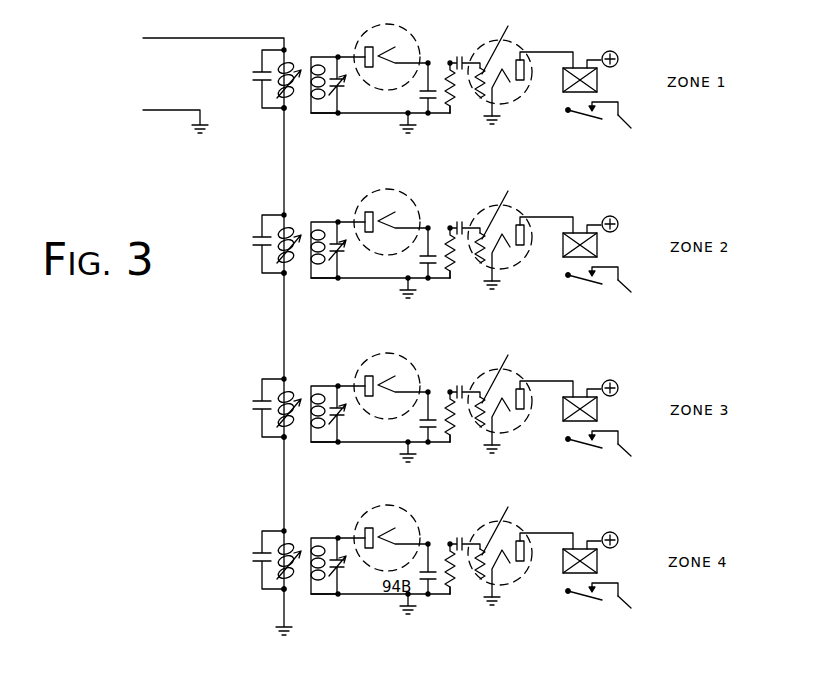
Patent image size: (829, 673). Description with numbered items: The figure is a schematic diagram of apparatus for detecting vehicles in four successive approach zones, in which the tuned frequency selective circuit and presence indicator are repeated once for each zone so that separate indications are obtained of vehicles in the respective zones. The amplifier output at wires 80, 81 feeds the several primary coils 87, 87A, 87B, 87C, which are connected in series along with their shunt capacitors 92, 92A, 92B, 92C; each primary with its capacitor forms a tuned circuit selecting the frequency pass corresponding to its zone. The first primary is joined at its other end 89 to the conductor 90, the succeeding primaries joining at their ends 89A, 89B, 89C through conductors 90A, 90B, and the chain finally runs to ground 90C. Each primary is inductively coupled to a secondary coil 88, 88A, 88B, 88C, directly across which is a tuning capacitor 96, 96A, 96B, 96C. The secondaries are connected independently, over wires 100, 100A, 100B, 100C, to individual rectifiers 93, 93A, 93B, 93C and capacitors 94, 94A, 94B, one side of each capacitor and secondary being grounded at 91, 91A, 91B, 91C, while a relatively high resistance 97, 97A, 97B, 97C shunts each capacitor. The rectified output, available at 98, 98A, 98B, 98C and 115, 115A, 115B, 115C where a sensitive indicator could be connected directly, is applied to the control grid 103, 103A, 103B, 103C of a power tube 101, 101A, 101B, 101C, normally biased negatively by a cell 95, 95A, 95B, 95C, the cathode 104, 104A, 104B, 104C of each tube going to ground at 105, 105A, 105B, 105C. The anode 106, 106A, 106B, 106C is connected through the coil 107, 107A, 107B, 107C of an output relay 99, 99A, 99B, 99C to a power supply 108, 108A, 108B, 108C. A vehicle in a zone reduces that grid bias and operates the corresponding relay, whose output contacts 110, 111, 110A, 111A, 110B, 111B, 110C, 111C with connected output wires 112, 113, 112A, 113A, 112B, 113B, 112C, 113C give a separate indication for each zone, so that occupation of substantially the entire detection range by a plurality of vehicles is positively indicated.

The amplifier output wire 80 is at (190, 37).
The amplifier output wire 81 is at (180, 110).
The primary coil 87 is at (287, 50).
The secondary coil 88 is at (320, 60).
The other end of primary 89 is at (286, 110).
The ground 90 is at (283, 168).
The ground 91 is at (404, 135).
The capacitor 92 is at (258, 79).
The rectifier 93 is at (406, 30).
The capacitor 94 is at (414, 89).
The cell 95 is at (463, 55).
The tuning capacitor 96 is at (343, 87).
The high resistance 97 is at (452, 96).
The rectified output connection 98 is at (428, 60).
The output relay 99 is at (591, 33).
The wire 100 is at (343, 54).
The power tube 101 is at (484, 44).
The control grid 103 is at (501, 41).
The cathode 104 is at (498, 78).
The ground 105 is at (491, 128).
The anode 106 is at (524, 60).
The relay coil 107 is at (597, 78).
The power supply 108 is at (612, 51).
The output contact 110 is at (583, 116).
The output contact 111 is at (611, 101).
The output wire 112 is at (567, 113).
The output wire 113 is at (633, 130).
The rectified output terminal 115 is at (449, 116).
The primary coil 87A is at (298, 238).
The secondary coil 88A is at (327, 231).
The end of primary coil 89A is at (301, 284).
The conductor 90A is at (282, 328).
The ground 91A is at (393, 298).
The capacitor 92A is at (253, 244).
The rectifier 93A is at (395, 214).
The capacitor 94A is at (411, 254).
The cell 95A is at (459, 219).
The tuning capacitor 96A is at (351, 250).
The high resistance 97A is at (463, 256).
The rectified output connection 98A is at (440, 210).
The output relay 99A is at (581, 187).
The wire 100A is at (383, 200).
The power tube 101A is at (498, 226).
The control grid 103A is at (514, 208).
The cathode 104A is at (519, 265).
The ground 105A is at (495, 303).
The anode 106A is at (544, 220).
The relay coil 107A is at (604, 245).
The power supply 108A is at (619, 214).
The output contact 110A is at (591, 290).
The output contact 111A is at (628, 267).
The output wire 112A is at (555, 295).
The output wire 113A is at (639, 298).
The rectified output terminal 115A is at (455, 290).
The primary coil 87B is at (297, 402).
The secondary coil 88B is at (327, 395).
The end of primary coil 89B is at (300, 450).
The conductor 90B is at (282, 498).
The ground 91B is at (393, 462).
The capacitor 92B is at (253, 408).
The rectifier 93B is at (393, 378).
The capacitor 94B is at (409, 418).
The cell 95B is at (458, 383).
The tuning capacitor 96B is at (350, 414).
The high resistance 97B is at (463, 421).
The rectified output connection 98B is at (434, 373).
The output relay 99B is at (581, 351).
The wire 100B is at (383, 364).
The power tube 101B is at (496, 390).
The control grid 103B is at (510, 373).
The cathode 104B is at (519, 430).
The ground 105B is at (489, 465).
The anode 106B is at (544, 385).
The relay coil 107B is at (603, 409).
The power supply 108B is at (618, 379).
The output contact 110B is at (591, 455).
The output contact 111B is at (627, 431).
The output wire 112B is at (554, 455).
The output wire 113B is at (638, 459).
The rectified output terminal 115B is at (449, 453).
The primary coil 87C is at (297, 555).
The secondary coil 88C is at (327, 547).
The end of primary coil 89C is at (301, 602).
The ground 90C is at (291, 636).
The ground 91C is at (398, 619).
The capacitor 92C is at (268, 560).
The rectifier 93C is at (393, 528).
The cell 95C is at (456, 534).
The tuning capacitor 96C is at (350, 566).
The high resistance 97C is at (463, 573).
The rectified output connection 98C is at (430, 524).
The output relay 99C is at (579, 506).
The wire 100C is at (383, 517).
The power tube 101C is at (496, 543).
The control grid 103C is at (509, 524).
The cathode 104C is at (518, 579).
The ground 105C is at (492, 618).
The anode 106C is at (544, 537).
The relay coil 107C is at (602, 561).
The power supply 108C is at (617, 529).
The output contact 110C is at (589, 608).
The output contact 111C is at (626, 585).
The output wire 112C is at (551, 610).
The output wire 113C is at (634, 612).
The rectified output terminal 115C is at (451, 607).